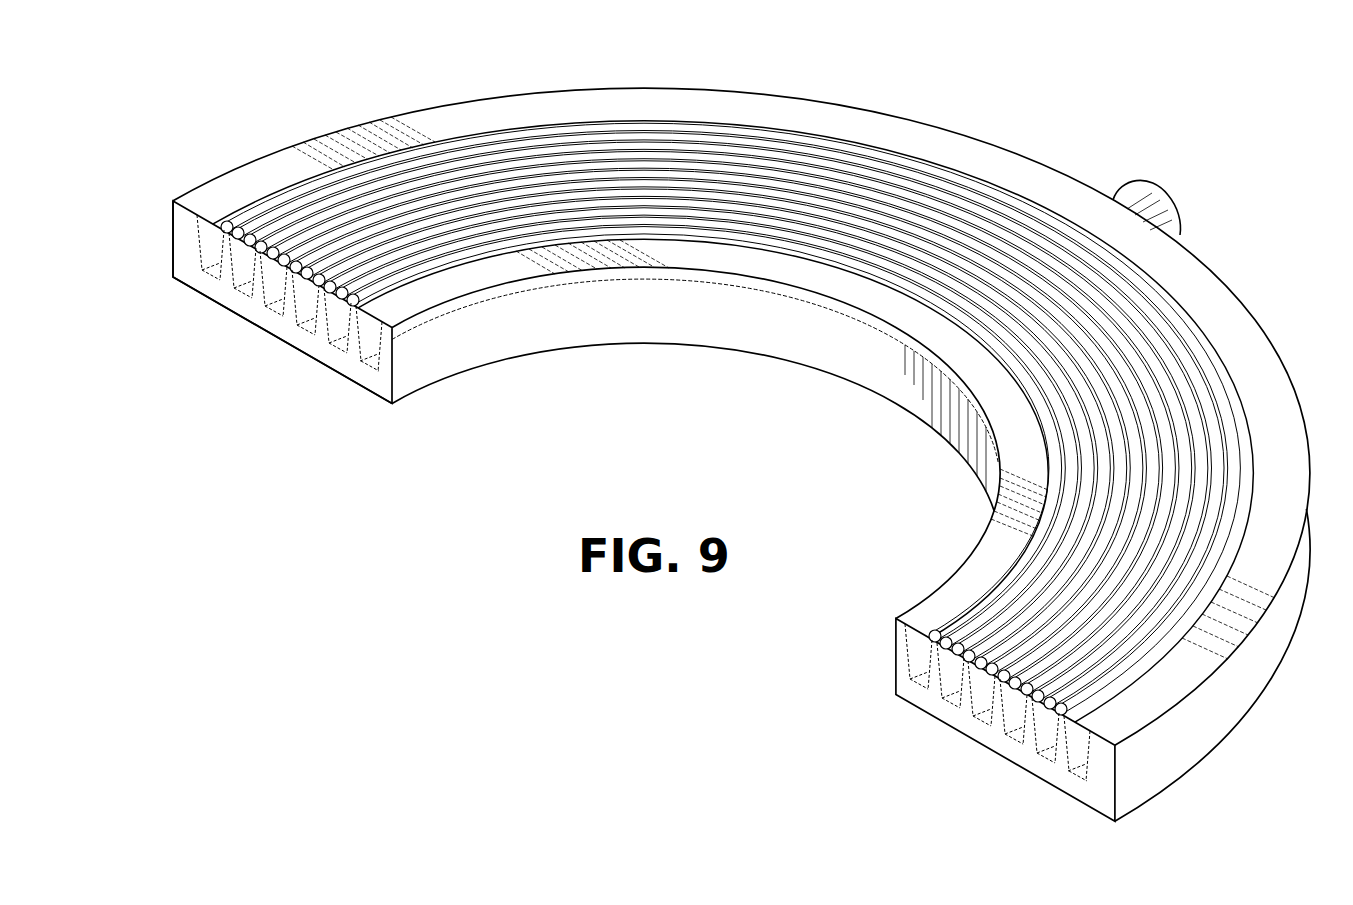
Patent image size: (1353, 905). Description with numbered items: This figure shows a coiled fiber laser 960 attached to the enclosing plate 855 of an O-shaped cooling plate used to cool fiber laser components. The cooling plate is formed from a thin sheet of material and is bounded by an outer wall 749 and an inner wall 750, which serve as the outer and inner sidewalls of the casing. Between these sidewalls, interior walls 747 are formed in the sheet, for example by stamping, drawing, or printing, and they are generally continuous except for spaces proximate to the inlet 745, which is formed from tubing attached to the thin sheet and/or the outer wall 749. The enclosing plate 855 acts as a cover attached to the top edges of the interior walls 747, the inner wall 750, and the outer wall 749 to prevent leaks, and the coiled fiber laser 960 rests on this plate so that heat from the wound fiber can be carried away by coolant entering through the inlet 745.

The coiled fiber laser 960 is at (656, 120).
The enclosing plate 855 is at (220, 190).
The outer wall 749 is at (172, 238).
The interior walls 747 is at (317, 318).
The inner wall 750 is at (433, 360).
The inlet 745 is at (1177, 200).